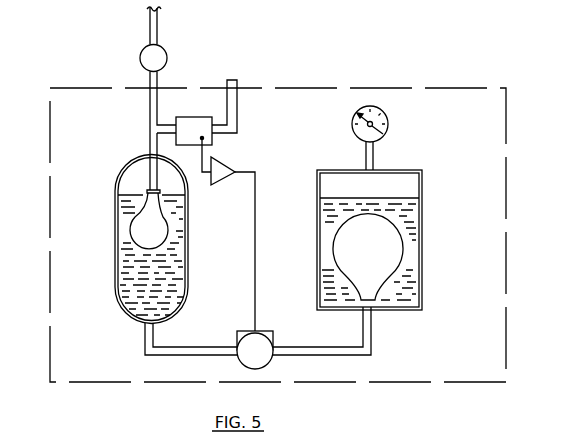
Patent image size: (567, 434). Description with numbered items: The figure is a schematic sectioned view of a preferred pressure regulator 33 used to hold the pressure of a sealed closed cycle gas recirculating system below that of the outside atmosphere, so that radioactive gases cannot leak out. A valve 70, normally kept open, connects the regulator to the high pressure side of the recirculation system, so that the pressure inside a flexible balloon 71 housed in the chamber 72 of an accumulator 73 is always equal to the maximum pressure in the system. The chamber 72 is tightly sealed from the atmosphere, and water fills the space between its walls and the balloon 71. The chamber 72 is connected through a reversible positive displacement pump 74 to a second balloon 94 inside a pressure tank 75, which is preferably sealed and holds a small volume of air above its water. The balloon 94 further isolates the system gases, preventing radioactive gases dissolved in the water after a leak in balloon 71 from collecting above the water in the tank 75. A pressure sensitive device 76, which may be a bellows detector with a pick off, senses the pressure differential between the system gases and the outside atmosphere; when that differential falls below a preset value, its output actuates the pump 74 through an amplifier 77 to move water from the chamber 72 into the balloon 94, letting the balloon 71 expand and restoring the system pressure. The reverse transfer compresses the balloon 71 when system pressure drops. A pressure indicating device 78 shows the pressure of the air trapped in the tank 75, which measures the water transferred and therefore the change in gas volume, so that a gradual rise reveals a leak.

The pressure regulator 33 is at (456, 86).
The valve 70 is at (140, 58).
The flexible balloon 71 is at (158, 238).
The chamber 72 is at (138, 166).
The accumulator 73 is at (115, 230).
The reversible positive displacement pump 74 is at (263, 345).
The pressure tank 75 is at (422, 188).
The pressure sensitive device 76 is at (190, 116).
The amplifier 77 is at (220, 184).
The pressure indicating device 78 is at (389, 123).
The balloon 94 is at (397, 250).